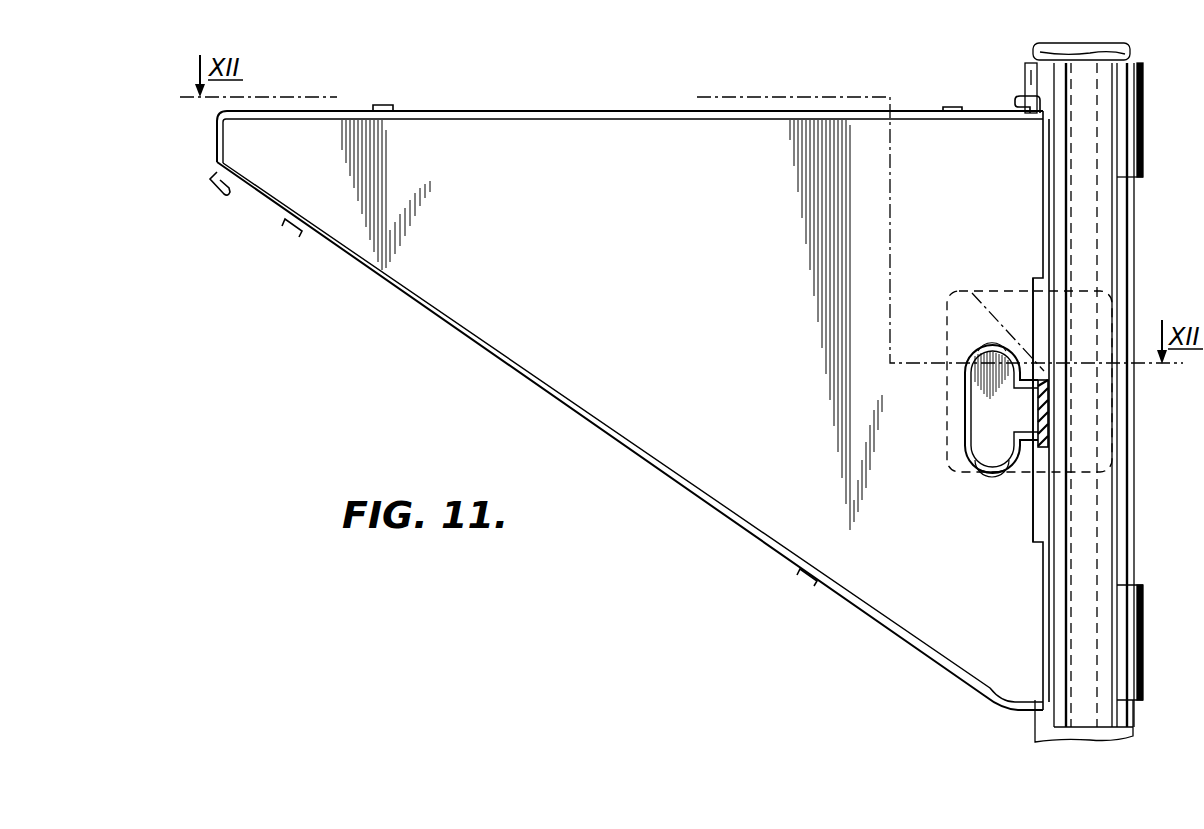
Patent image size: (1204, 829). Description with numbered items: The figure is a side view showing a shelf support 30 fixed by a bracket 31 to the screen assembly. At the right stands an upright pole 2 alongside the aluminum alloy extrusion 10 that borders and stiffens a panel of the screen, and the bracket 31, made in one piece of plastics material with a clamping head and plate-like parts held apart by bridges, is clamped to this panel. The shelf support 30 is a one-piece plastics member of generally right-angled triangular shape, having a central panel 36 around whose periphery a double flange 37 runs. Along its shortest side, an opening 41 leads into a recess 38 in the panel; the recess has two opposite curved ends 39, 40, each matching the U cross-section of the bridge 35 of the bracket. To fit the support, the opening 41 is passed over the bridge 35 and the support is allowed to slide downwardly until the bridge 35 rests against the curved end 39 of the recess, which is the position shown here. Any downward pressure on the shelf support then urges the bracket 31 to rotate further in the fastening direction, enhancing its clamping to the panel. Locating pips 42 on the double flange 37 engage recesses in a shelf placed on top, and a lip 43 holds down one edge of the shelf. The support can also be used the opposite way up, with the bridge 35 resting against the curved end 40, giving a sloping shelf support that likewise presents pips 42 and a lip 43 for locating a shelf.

The upright pole 2 is at (1130, 56).
The aluminum alloy extrusion 10 is at (1110, 236).
The shelf support 30 is at (633, 390).
The bracket 31 is at (1017, 297).
The bridge of U cross-section 35 is at (968, 377).
The central panel 36 is at (688, 280).
The double flange 37 is at (567, 111).
The recess 38 is at (984, 450).
The curved end 39 is at (990, 349).
The curved end 40 is at (995, 470).
The opening 41 is at (1038, 412).
The locating pips 42 is at (382, 105).
The lip 43 is at (218, 188).